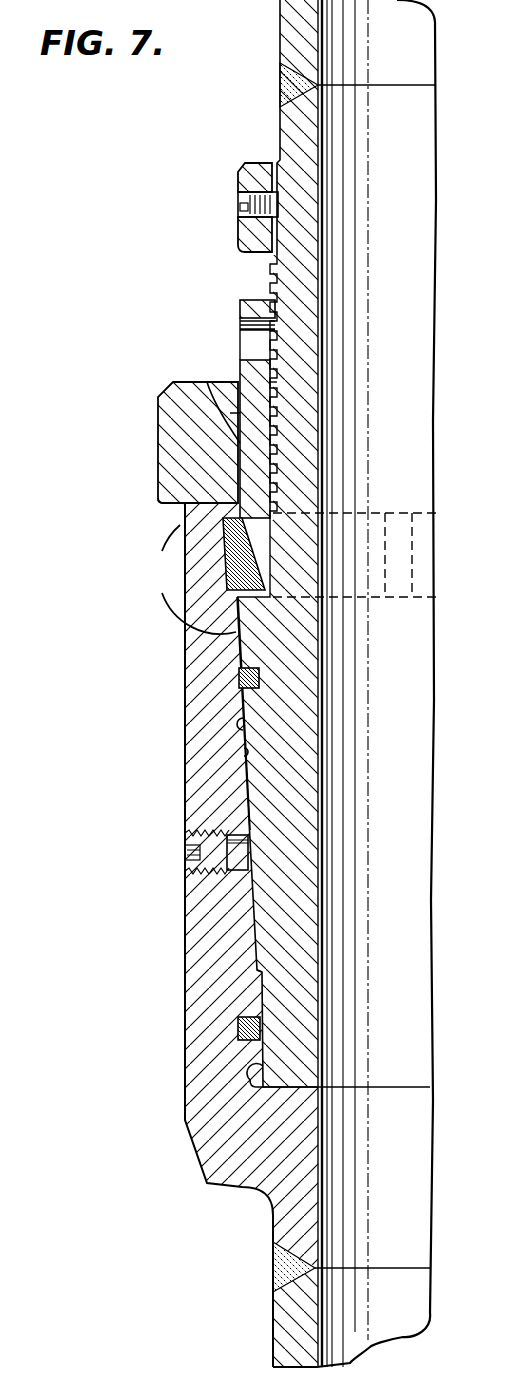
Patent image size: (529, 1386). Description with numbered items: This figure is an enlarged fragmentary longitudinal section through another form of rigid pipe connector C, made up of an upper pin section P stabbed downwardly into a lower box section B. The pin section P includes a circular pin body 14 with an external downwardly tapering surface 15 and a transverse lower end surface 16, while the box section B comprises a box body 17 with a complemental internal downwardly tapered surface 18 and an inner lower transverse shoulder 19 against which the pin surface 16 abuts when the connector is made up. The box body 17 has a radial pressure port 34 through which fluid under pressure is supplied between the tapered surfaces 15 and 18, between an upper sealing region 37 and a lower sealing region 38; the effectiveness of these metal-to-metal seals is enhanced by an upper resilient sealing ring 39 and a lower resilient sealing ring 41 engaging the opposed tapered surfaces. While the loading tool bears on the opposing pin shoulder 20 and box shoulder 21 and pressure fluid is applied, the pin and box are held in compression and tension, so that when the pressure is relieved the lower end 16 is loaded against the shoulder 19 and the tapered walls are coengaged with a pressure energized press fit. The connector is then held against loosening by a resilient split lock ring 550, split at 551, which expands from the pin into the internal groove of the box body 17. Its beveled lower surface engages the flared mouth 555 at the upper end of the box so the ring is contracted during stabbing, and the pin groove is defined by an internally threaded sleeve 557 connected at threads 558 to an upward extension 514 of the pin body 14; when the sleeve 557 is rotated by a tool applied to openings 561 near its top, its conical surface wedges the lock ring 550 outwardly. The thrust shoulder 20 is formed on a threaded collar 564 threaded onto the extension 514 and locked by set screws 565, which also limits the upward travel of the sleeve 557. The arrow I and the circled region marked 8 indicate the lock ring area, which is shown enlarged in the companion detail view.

The pin shoulder 20 is at (201, 182).
The set screws 565 is at (255, 195).
The threaded collar 564 is at (238, 233).
The upward extension of the pin body 514 is at (300, 257).
The openings 561 is at (248, 338).
The flared mouth 555 is at (227, 383).
The threaded connection 558 is at (277, 382).
The threaded sleeve 557 is at (250, 452).
The box shoulder 21 is at (160, 505).
The split 551 is at (417, 560).
The split lock ring 550 is at (233, 565).
The upper sealing ring 39 is at (239, 680).
The upper sealing region 37 is at (242, 698).
The external downwardly tapering surface 15 is at (243, 728).
The internal downwardly tapered surface 18 is at (247, 752).
The box body 17 is at (202, 792).
The pin body 14 is at (303, 800).
The radial pressure port 34 is at (237, 853).
The lower sealing region 38 is at (262, 972).
The lower sealing ring 41 is at (237, 1028).
The box shoulder surface 19 is at (287, 1087).
The lower end surface 16 is at (298, 1095).
The pin section P is at (320, 898).
The box section B is at (198, 933).
The pipe connector C is at (123, 1032).
The interface I is at (240, 548).
The detail section 8 is at (188, 579).